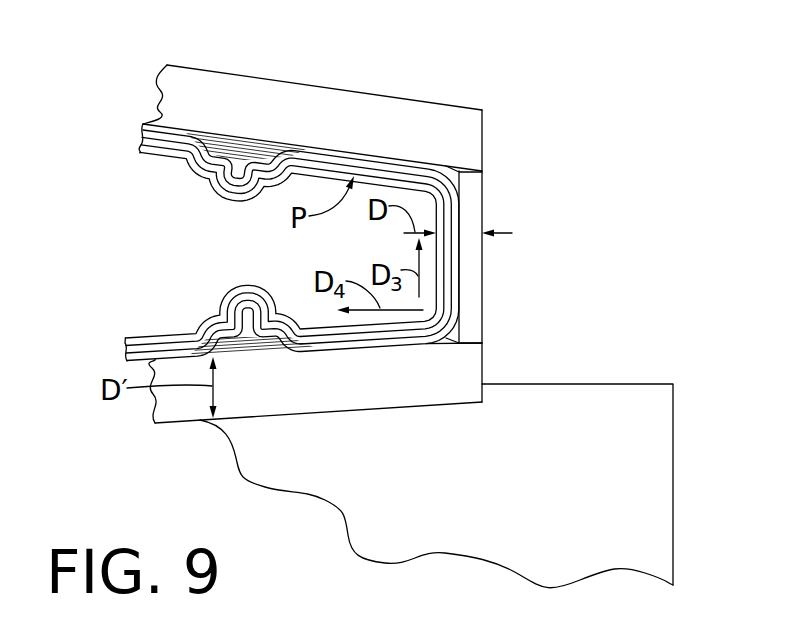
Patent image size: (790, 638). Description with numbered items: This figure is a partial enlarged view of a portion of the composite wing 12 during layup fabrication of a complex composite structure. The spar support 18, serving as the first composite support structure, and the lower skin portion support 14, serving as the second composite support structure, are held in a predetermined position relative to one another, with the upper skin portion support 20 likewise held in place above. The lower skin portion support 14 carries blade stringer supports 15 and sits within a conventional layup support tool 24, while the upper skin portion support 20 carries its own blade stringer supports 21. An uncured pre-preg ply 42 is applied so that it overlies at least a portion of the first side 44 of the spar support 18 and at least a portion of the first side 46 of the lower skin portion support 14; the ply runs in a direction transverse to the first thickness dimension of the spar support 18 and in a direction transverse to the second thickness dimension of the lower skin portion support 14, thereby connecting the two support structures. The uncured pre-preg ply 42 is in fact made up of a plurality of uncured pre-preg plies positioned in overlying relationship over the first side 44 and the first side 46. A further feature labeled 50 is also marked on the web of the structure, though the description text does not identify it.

The composite wing 12 is at (401, 70).
The lower skin portion support 14 is at (458, 378).
The blade stringer supports 15 is at (256, 348).
The spar support 18 is at (472, 272).
The upper skin portion support 20 is at (449, 129).
The blade stringer supports 21 is at (238, 152).
The layup support tool 24 is at (627, 445).
The uncured pre-preg ply 42 is at (453, 171).
The first side of first composite support structure 44 is at (458, 300).
The first side of second composite support structure 46 is at (330, 352).
The web outer surface 50 is at (482, 207).